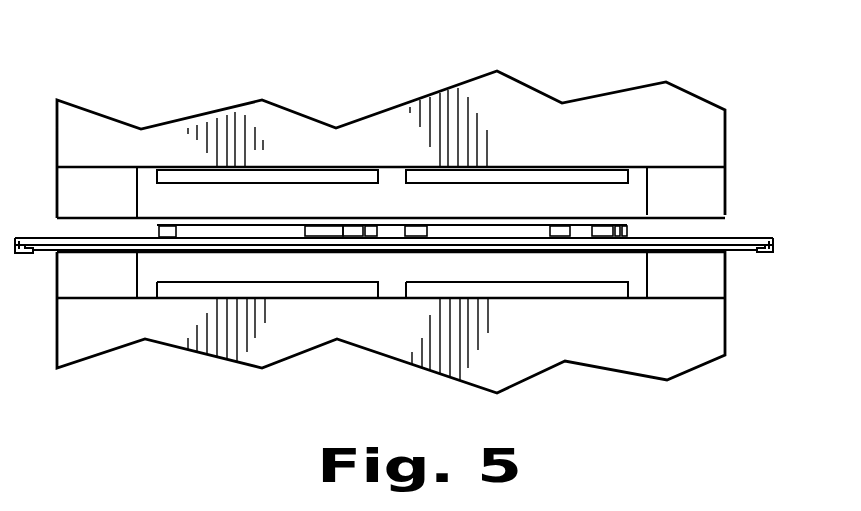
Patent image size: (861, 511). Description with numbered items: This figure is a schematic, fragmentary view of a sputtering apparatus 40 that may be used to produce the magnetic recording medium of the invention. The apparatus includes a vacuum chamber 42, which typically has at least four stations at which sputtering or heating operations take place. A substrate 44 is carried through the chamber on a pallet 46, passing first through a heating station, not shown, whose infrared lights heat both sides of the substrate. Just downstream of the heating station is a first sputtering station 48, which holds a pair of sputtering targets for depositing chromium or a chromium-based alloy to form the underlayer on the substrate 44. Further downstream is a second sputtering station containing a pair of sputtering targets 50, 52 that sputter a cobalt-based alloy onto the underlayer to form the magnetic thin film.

The sputtering apparatus 40 is at (745, 109).
The vacuum chamber 42 is at (740, 226).
The substrate 44 is at (453, 233).
The pallet 46 is at (740, 244).
The first sputtering station 48 is at (278, 164).
The sputtering target 50 is at (545, 284).
The sputtering target 52 is at (523, 177).